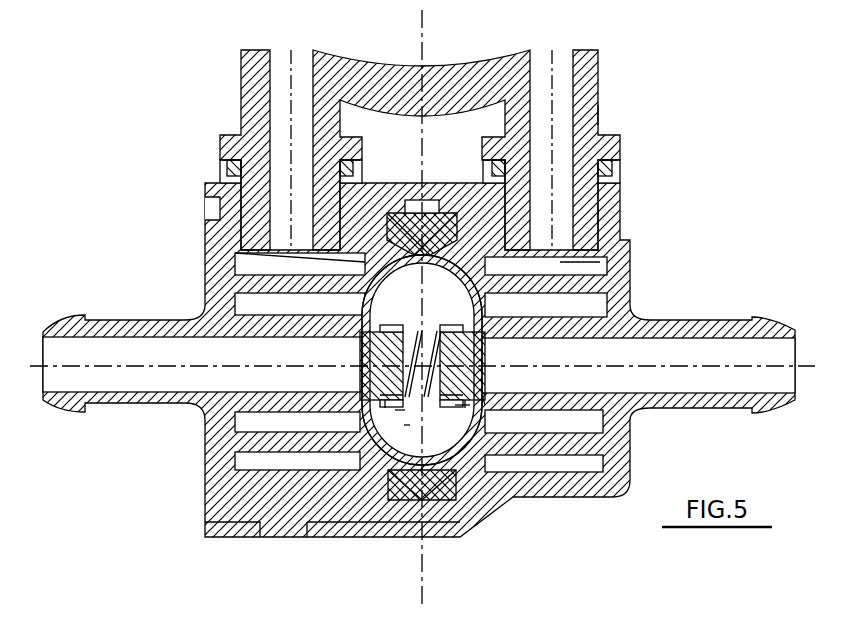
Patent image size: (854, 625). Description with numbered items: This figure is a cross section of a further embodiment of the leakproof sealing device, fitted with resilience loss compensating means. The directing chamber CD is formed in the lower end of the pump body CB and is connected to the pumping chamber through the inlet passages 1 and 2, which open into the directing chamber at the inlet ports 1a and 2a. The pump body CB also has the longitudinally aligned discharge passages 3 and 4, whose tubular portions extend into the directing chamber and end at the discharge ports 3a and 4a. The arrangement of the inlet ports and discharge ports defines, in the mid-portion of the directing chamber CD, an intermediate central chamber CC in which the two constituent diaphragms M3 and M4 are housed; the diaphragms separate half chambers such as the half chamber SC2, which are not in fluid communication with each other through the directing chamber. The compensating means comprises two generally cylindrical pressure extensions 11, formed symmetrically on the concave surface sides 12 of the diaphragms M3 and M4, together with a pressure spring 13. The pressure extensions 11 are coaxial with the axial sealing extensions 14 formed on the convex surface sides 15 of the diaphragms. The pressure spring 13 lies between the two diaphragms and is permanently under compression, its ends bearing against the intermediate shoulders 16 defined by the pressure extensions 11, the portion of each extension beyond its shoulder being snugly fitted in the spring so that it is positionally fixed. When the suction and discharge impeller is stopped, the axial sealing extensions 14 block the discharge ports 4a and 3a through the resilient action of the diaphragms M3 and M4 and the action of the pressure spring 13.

The inlet passage 1 is at (275, 87).
The inlet port 1a is at (215, 183).
The inlet passage 2 is at (560, 72).
The inlet port 2a is at (560, 262).
The discharge passage 3 is at (405, 77).
The discharge port 3a is at (487, 405).
The discharge passage 4 is at (117, 403).
The discharge port 4a is at (362, 345).
The pressure extension 11 is at (385, 405).
The concave surface side 12 is at (600, 247).
The pressure spring 13 is at (405, 430).
The axial sealing extension 14 is at (378, 398).
The convex surface side 15 is at (300, 262).
The intermediate shoulder 16 is at (240, 312).
The pump body CB is at (598, 112).
The central chamber CC is at (400, 415).
The directing chamber CD is at (578, 427).
The half chamber SC2 is at (315, 308).
The diaphragm M3 is at (413, 470).
The diaphragm M4 is at (460, 420).